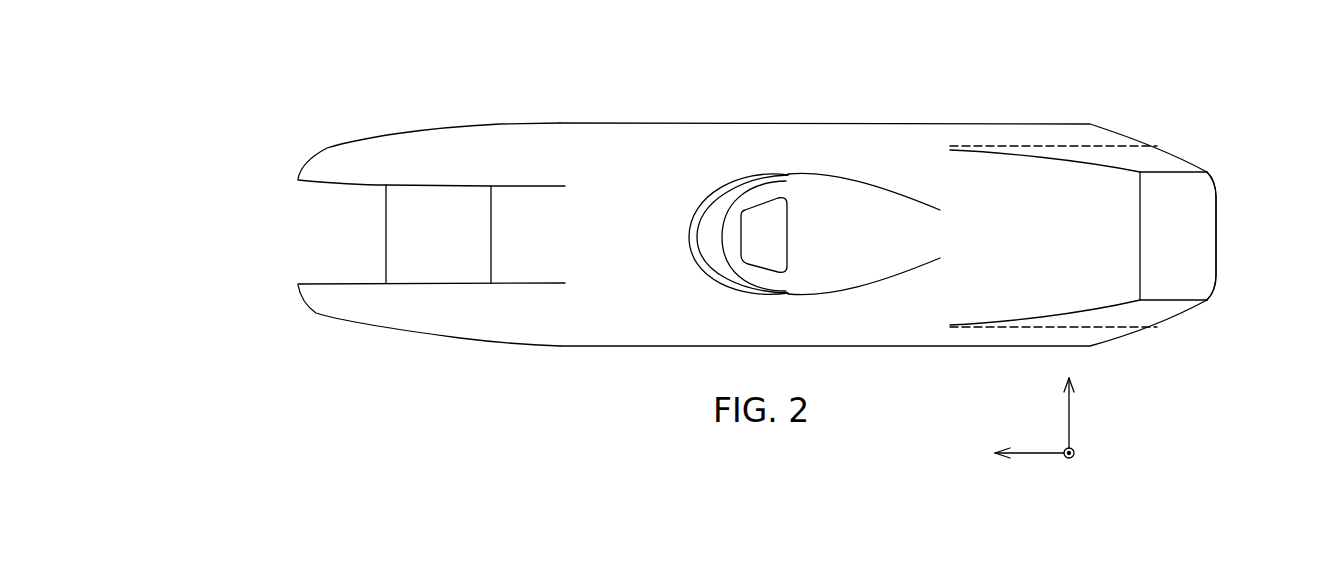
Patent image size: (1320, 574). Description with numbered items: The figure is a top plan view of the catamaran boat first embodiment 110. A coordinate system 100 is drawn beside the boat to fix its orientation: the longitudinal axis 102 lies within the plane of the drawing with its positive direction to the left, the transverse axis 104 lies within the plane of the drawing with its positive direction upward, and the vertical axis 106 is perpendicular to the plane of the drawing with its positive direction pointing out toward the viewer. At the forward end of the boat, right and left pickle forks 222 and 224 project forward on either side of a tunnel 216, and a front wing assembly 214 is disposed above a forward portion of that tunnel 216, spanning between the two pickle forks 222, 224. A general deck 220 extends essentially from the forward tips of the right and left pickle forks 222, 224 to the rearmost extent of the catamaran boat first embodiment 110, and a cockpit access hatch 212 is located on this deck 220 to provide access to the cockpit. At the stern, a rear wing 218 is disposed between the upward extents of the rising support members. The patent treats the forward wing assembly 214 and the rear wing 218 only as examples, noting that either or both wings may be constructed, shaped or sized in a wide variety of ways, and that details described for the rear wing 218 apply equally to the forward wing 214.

The coordinate system 100 is at (1103, 445).
The longitudinal axis 102 is at (1038, 452).
The transverse axis 104 is at (1071, 425).
The vertical axis 106 is at (1073, 458).
The catamaran boat first embodiment 110 is at (317, 105).
The cockpit access hatch 212 is at (788, 210).
The front wing assembly 214 is at (478, 188).
The tunnel 216 is at (317, 230).
The rear wing 218 is at (1216, 208).
The general deck 220 is at (613, 322).
The right pickle fork 222 is at (403, 138).
The left pickle fork 224 is at (327, 313).